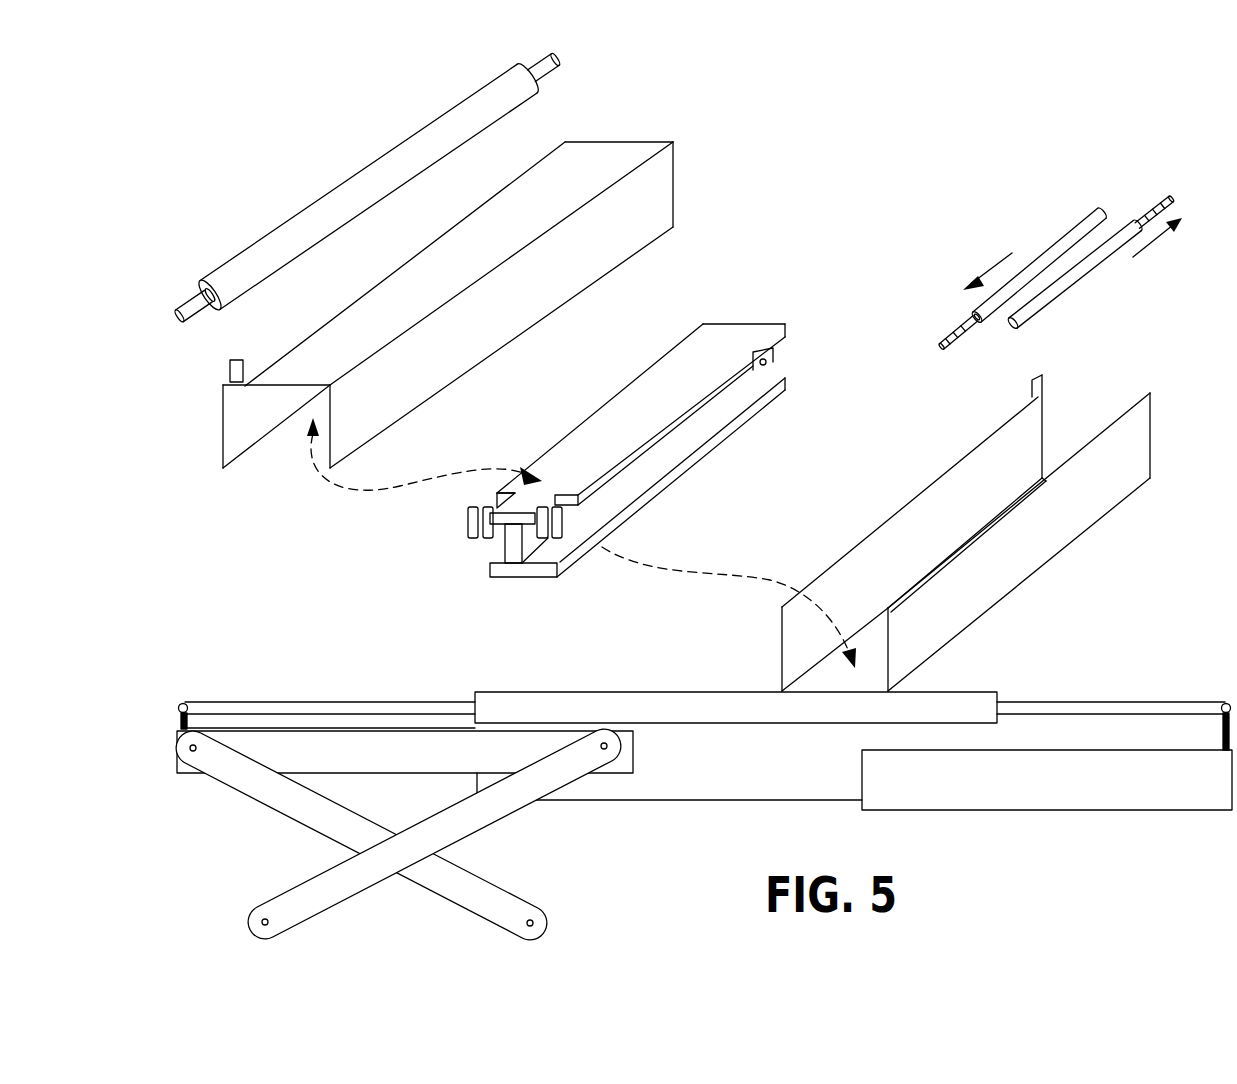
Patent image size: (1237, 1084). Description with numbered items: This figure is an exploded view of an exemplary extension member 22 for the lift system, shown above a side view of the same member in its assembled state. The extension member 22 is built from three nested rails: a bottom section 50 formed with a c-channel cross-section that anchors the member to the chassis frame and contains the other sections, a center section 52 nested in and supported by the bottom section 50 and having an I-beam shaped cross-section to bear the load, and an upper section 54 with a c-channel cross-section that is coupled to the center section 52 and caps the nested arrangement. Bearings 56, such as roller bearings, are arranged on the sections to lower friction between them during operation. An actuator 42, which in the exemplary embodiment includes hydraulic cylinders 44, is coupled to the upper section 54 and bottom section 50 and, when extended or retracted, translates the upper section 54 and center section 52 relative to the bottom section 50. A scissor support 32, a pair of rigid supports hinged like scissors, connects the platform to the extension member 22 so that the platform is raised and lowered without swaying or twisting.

The second extension member 22 is at (262, 598).
The first scissor support 32 is at (260, 806).
The actuator 42 is at (388, 151).
The hydraulic cylinders 44 is at (613, 690).
The bottom section 50 is at (1027, 564).
The center section 52 is at (657, 421).
The upper section 54 is at (493, 252).
The bearings 56 is at (447, 531).